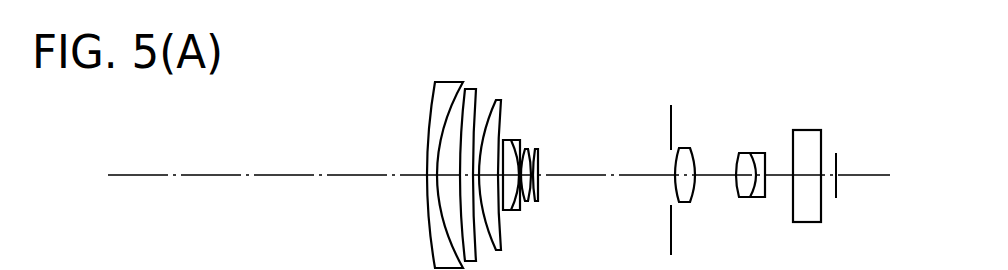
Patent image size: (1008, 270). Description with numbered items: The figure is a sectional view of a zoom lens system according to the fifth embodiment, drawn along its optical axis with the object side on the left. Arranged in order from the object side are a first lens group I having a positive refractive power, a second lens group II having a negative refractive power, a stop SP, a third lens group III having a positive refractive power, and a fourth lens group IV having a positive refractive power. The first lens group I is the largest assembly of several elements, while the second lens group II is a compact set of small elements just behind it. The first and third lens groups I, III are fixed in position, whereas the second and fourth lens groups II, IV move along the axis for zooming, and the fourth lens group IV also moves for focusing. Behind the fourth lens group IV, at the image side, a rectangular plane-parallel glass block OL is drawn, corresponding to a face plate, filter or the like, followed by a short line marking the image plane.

The first lens group I is at (423, 41).
The second lens group II is at (545, 41).
The third lens group III is at (663, 41).
The fourth lens group IV is at (733, 41).
The stop SP is at (669, 238).
The optical block (filter / face plate) OL is at (815, 130).